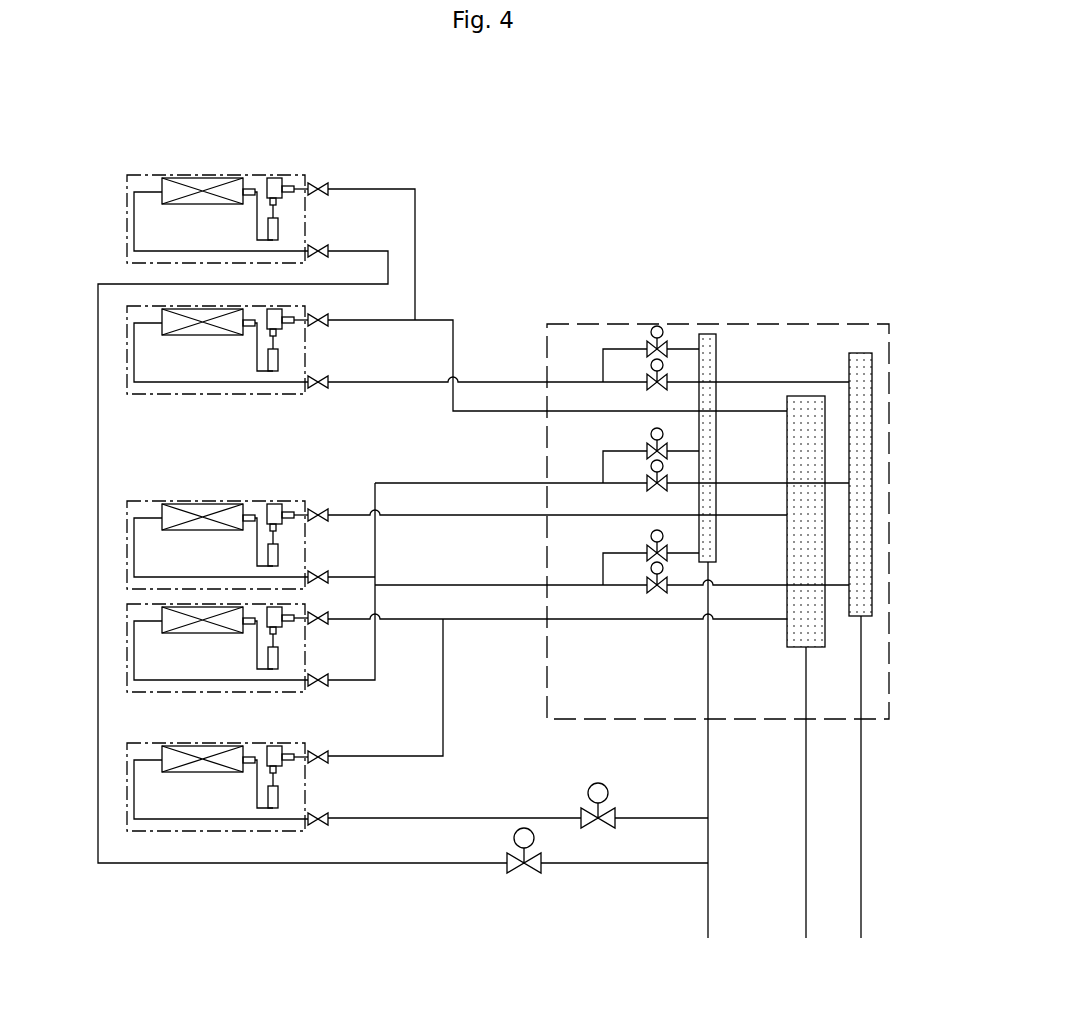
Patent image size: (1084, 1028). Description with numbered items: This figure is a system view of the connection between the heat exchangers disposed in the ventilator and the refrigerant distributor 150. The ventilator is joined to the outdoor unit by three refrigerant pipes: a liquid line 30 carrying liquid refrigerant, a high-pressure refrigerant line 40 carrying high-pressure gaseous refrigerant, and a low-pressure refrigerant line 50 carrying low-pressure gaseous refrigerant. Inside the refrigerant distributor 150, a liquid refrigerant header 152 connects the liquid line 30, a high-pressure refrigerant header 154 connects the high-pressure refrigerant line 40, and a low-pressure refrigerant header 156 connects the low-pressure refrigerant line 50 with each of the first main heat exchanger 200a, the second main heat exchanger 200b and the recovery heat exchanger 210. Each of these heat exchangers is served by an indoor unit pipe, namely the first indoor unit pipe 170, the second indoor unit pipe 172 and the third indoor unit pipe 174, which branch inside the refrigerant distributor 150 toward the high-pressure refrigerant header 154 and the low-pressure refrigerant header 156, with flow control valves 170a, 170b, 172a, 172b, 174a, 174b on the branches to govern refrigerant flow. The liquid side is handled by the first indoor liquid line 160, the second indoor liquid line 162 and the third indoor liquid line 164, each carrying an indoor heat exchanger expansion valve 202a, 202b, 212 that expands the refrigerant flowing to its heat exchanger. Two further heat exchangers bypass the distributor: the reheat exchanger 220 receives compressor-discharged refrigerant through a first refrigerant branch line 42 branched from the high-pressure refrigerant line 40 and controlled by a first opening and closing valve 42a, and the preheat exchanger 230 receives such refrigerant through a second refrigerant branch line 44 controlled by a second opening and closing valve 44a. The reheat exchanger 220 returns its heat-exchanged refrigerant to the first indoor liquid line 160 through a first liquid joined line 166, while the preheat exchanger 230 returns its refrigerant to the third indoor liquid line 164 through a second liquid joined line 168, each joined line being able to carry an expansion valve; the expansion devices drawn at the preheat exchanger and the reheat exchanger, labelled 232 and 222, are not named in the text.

The preheat exchanger 230 is at (203, 186).
The expansion valve 232 is at (270, 180).
The second liquid joined line 168 is at (377, 188).
The second refrigerant branch line 44 is at (98, 318).
The indoor heat exchanger expansion valve 212 is at (276, 312).
The recovery heat exchanger 210 is at (263, 368).
The third indoor unit pipe 174 is at (378, 382).
The third indoor liquid line 164 is at (453, 340).
The second main heat exchanger 200b is at (228, 510).
The indoor heat exchanger expansion valve 202b is at (275, 500).
The second indoor unit pipe 172 is at (405, 483).
The second indoor liquid line 162 is at (405, 516).
The indoor heat exchanger expansion valve 202a is at (272, 615).
The first indoor liquid line 160 is at (410, 620).
The first indoor unit pipe 170 is at (375, 653).
The first main heat exchanger 200a is at (253, 658).
The expansion valve 222 is at (276, 746).
The reheat exchanger 220 is at (263, 766).
The first liquid joined line 166 is at (423, 758).
The first refrigerant branch line 42 is at (455, 820).
The first opening and closing valve 42a is at (600, 816).
The second opening and closing valve 44a is at (514, 868).
The high-pressure refrigerant line 40 is at (708, 926).
The liquid line 30 is at (806, 926).
The low-pressure refrigerant line 50 is at (861, 926).
The refrigerant distributor 150 is at (889, 331).
The liquid refrigerant header 152 is at (800, 396).
The high-pressure refrigerant header 154 is at (706, 336).
The low-pressure refrigerant header 156 is at (863, 402).
The flow control valve 174a is at (650, 384).
The flow control valve 174b is at (650, 350).
The flow control valve 172a is at (650, 486).
The flow control valve 172b is at (650, 452).
The flow control valve 170a is at (650, 590).
The flow control valve 170b is at (650, 554).